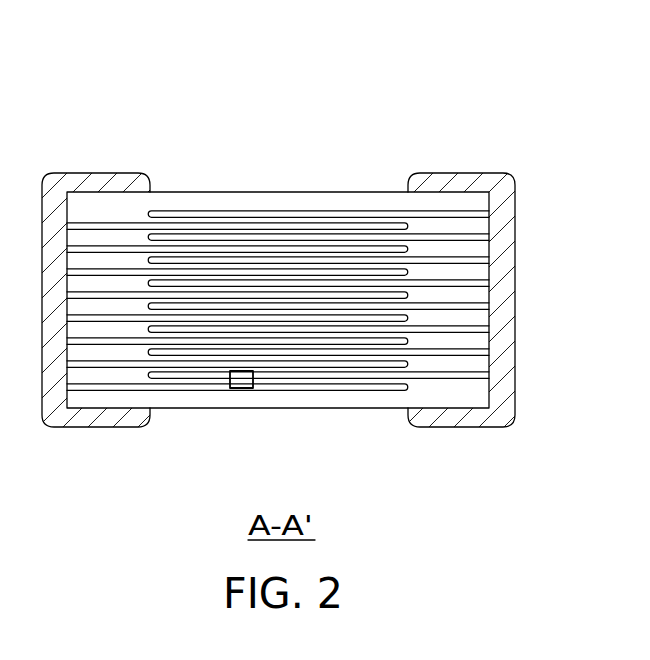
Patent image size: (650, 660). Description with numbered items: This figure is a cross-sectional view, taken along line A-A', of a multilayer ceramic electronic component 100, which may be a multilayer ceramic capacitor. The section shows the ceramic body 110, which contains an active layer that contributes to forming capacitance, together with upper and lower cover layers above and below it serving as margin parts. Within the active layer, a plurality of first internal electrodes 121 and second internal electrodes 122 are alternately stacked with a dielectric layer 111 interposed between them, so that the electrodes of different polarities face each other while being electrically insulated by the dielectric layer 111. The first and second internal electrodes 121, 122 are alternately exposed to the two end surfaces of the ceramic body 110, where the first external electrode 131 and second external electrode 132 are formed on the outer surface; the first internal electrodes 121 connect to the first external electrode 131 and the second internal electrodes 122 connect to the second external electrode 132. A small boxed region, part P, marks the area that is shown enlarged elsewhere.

The multilayer ceramic electronic component 100 is at (175, 28).
The ceramic body 110 is at (293, 192).
The dielectric layer 111 is at (235, 221).
The first internal electrode 121 is at (187, 213).
The second internal electrode 122 is at (348, 224).
The first external electrode 131 is at (108, 178).
The second external electrode 132 is at (483, 172).
The part P is at (212, 389).